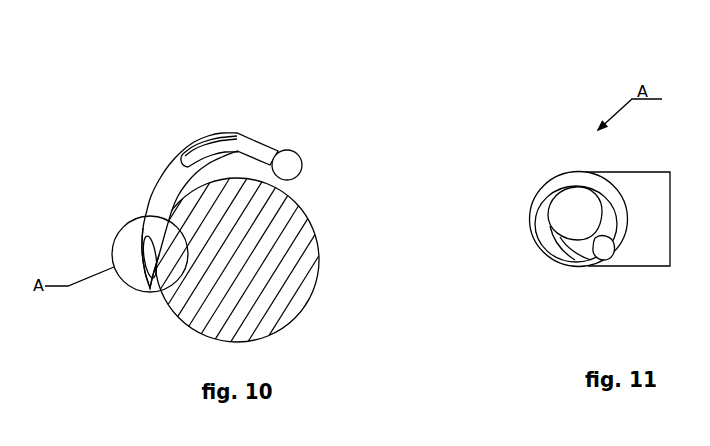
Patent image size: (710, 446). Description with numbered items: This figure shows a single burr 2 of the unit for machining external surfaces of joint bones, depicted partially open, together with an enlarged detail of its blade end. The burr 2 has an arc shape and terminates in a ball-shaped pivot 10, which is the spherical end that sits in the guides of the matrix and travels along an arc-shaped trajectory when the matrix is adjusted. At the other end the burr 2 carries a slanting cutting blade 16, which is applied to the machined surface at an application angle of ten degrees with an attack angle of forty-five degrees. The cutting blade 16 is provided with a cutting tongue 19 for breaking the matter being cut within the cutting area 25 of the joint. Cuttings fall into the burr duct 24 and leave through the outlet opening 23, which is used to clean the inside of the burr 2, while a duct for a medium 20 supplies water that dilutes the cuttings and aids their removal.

In FIG. 10, the burr 2 is at (150, 198).
In FIG. 10, the ball-shaped pivot 10 is at (302, 157).
In FIG. 10, the cutting blade 16 is at (139, 272).
In FIG. 11, the cutting tongue 19 is at (608, 262).
In FIG. 11, the duct for a medium 20 is at (569, 211).
In FIG. 10, the outlet opening 23 is at (210, 138).
In FIG. 10, the burr duct 24 is at (143, 247).
In FIG. 11, the cutting area 25 is at (562, 243).